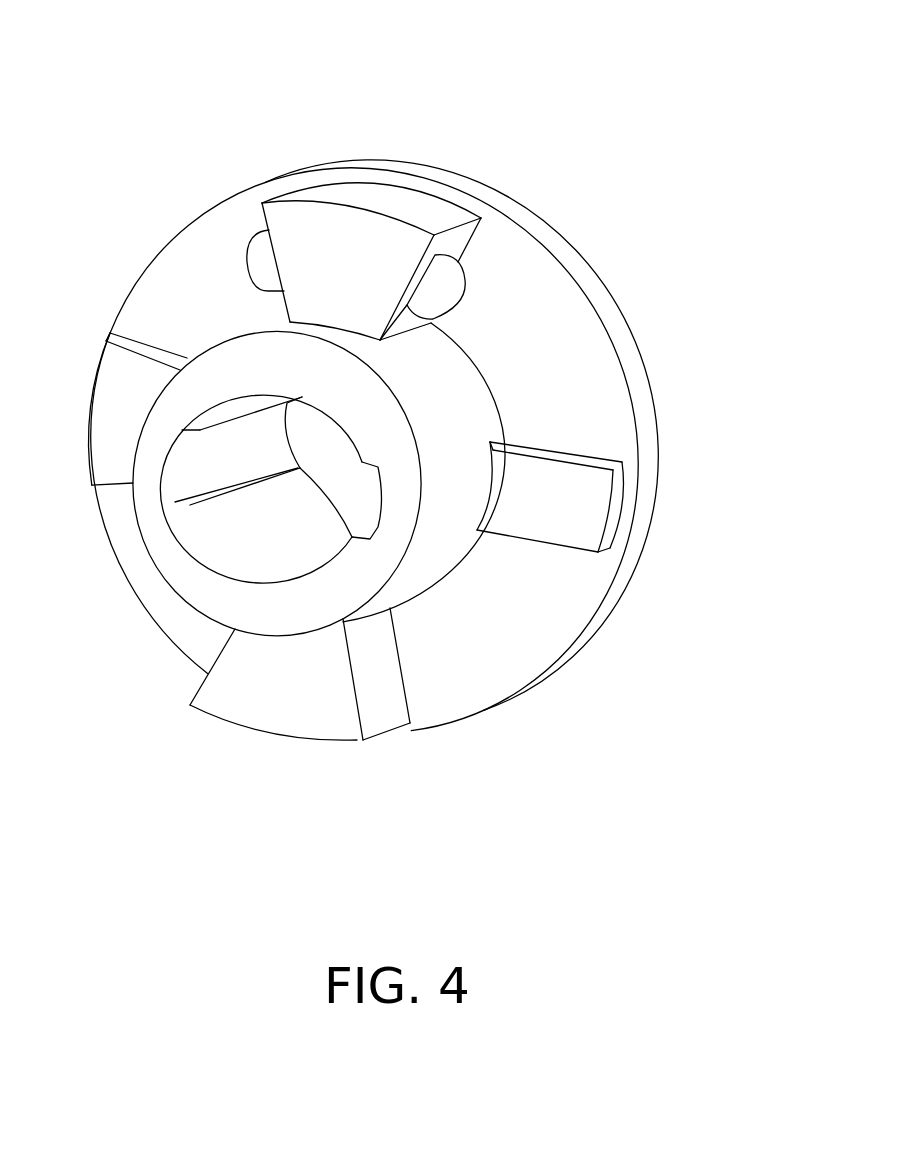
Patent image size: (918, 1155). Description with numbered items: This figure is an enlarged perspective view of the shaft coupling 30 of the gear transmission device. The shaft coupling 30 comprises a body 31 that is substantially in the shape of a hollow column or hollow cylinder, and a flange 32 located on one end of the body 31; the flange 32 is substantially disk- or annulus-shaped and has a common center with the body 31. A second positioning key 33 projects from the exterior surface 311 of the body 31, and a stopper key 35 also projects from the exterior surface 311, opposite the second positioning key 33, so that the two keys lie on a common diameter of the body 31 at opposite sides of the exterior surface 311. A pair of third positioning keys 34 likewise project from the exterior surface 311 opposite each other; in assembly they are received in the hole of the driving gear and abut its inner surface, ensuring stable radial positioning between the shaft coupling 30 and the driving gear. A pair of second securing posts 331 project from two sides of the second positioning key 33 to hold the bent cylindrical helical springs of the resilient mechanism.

The shaft coupling 30 is at (443, 70).
The body 31 is at (425, 562).
The exterior surface 311 is at (437, 407).
The flange 32 is at (647, 447).
The second positioning key 33 is at (332, 238).
The second securing posts 331 is at (263, 252).
The third positioning keys 34 is at (125, 381).
The stopper key 35 is at (285, 697).